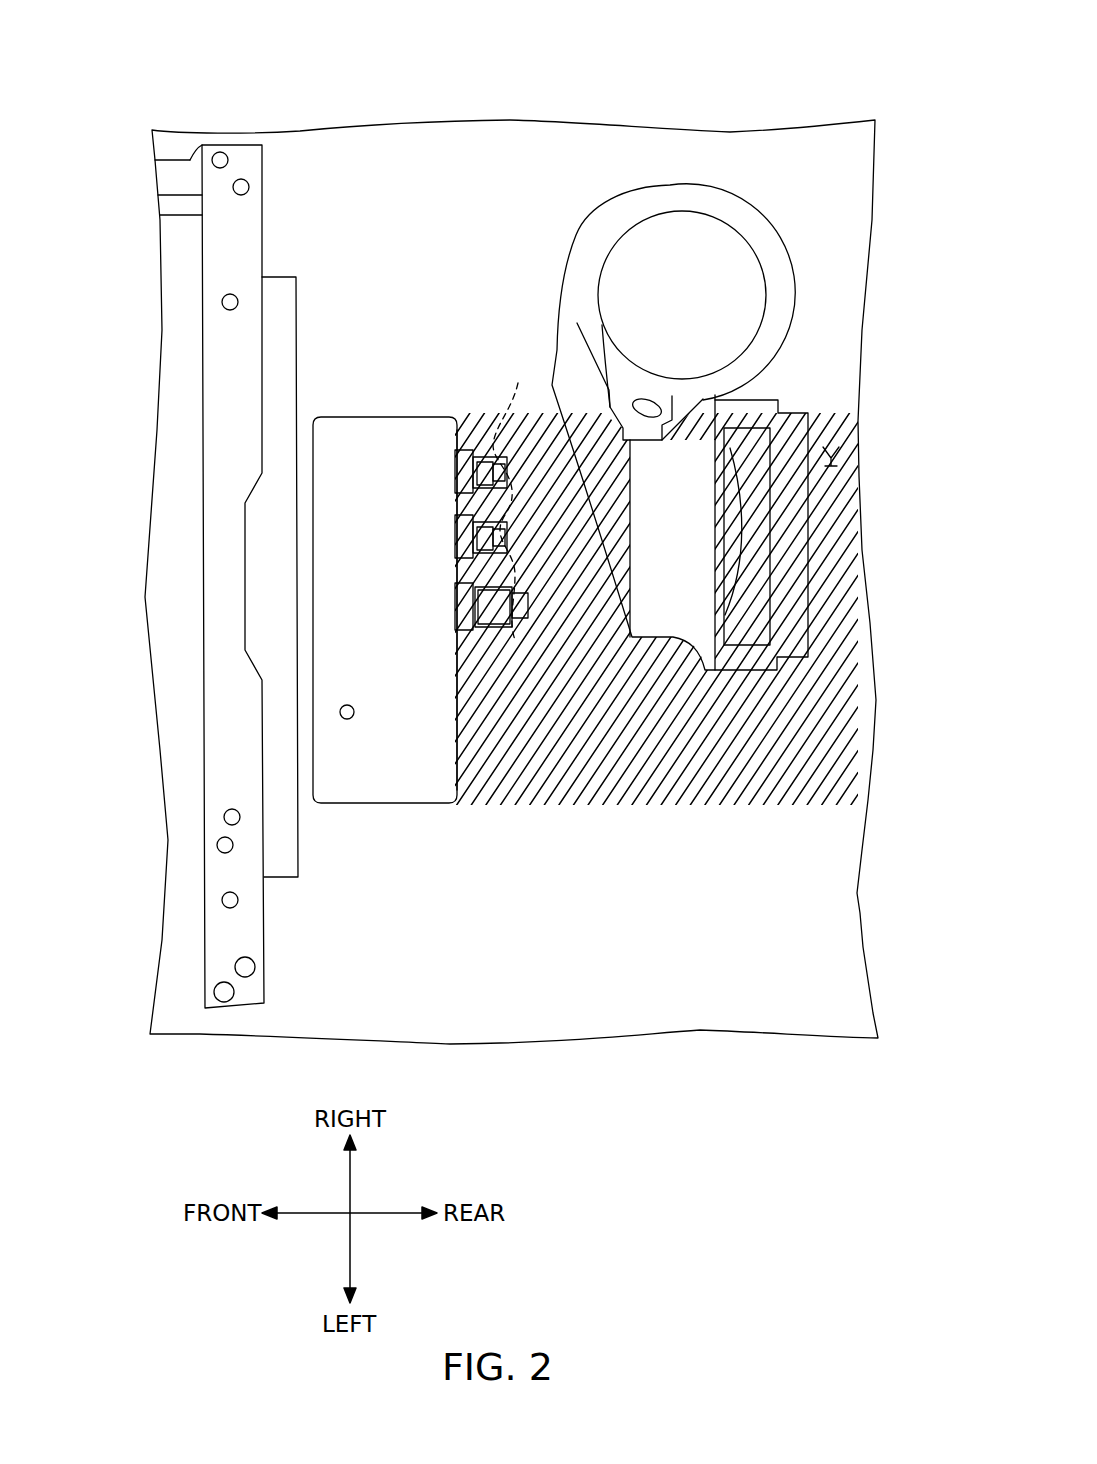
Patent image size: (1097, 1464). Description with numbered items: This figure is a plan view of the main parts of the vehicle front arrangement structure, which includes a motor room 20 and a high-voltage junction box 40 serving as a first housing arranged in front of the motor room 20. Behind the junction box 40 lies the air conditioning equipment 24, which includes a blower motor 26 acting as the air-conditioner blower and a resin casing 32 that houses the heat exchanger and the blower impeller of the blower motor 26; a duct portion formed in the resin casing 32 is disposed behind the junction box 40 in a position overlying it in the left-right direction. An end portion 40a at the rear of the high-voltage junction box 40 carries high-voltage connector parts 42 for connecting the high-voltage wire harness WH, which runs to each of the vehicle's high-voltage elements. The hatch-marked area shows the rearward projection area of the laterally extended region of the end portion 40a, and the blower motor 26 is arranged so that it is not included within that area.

The motor room 20 is at (748, 339).
The air conditioning equipment 24 is at (770, 247).
The blower motor 26 is at (683, 317).
The resin casing 32 is at (768, 420).
The high-voltage junction box 40 is at (353, 623).
The end portion 40a is at (458, 787).
The high-voltage connector parts 42 is at (456, 476).
The high-voltage wire harness WH is at (521, 495).